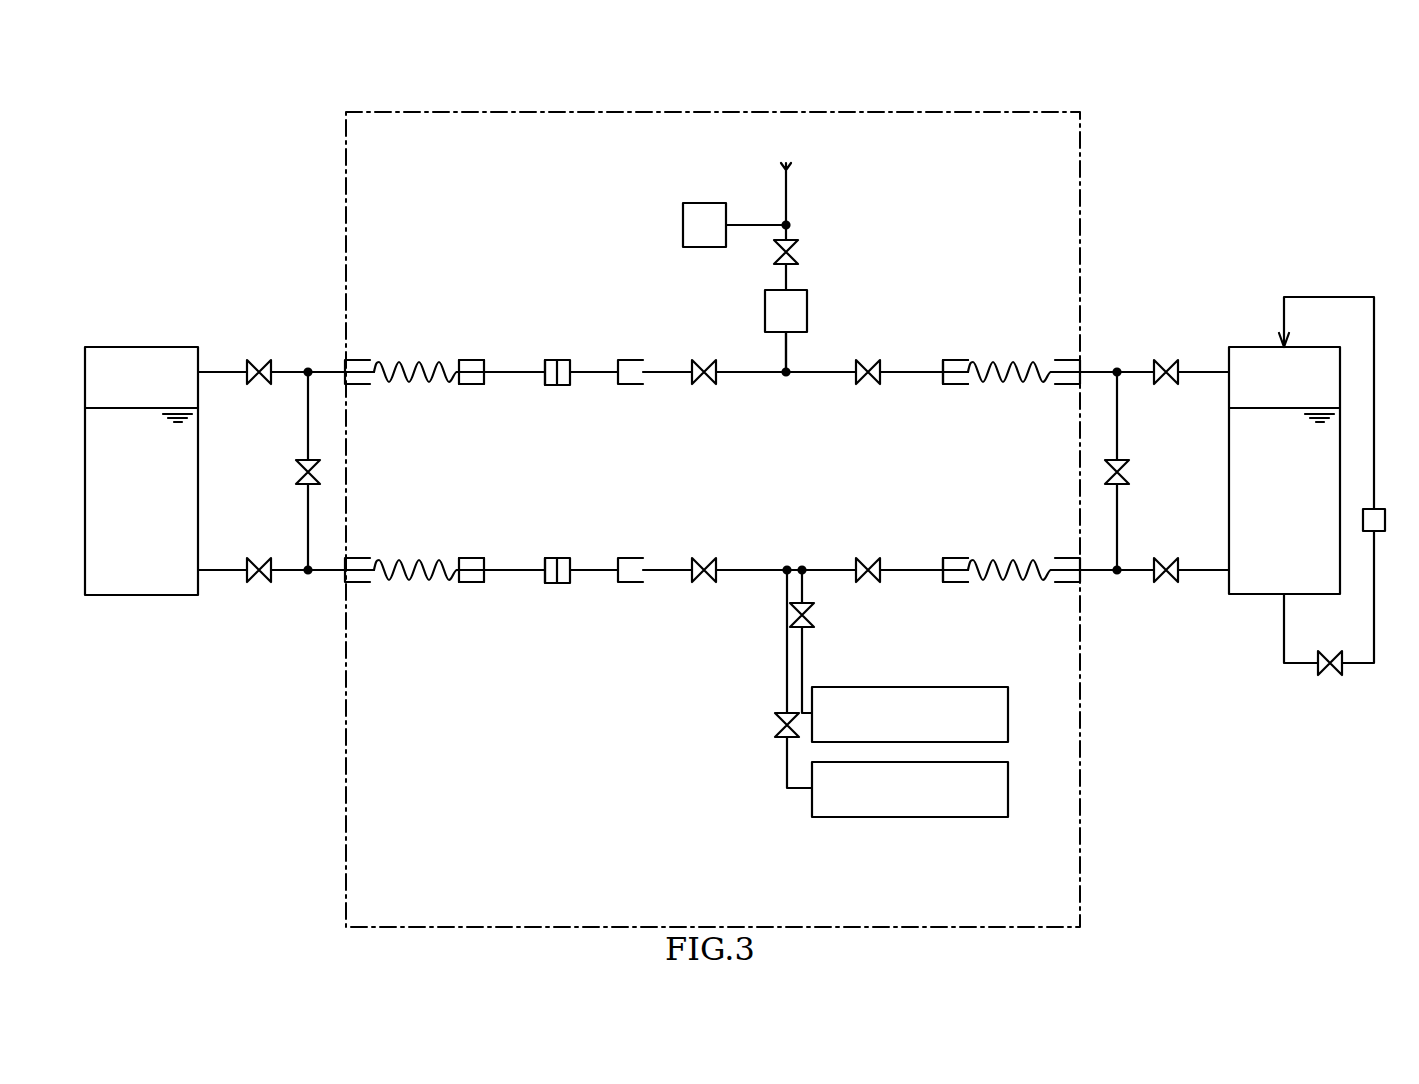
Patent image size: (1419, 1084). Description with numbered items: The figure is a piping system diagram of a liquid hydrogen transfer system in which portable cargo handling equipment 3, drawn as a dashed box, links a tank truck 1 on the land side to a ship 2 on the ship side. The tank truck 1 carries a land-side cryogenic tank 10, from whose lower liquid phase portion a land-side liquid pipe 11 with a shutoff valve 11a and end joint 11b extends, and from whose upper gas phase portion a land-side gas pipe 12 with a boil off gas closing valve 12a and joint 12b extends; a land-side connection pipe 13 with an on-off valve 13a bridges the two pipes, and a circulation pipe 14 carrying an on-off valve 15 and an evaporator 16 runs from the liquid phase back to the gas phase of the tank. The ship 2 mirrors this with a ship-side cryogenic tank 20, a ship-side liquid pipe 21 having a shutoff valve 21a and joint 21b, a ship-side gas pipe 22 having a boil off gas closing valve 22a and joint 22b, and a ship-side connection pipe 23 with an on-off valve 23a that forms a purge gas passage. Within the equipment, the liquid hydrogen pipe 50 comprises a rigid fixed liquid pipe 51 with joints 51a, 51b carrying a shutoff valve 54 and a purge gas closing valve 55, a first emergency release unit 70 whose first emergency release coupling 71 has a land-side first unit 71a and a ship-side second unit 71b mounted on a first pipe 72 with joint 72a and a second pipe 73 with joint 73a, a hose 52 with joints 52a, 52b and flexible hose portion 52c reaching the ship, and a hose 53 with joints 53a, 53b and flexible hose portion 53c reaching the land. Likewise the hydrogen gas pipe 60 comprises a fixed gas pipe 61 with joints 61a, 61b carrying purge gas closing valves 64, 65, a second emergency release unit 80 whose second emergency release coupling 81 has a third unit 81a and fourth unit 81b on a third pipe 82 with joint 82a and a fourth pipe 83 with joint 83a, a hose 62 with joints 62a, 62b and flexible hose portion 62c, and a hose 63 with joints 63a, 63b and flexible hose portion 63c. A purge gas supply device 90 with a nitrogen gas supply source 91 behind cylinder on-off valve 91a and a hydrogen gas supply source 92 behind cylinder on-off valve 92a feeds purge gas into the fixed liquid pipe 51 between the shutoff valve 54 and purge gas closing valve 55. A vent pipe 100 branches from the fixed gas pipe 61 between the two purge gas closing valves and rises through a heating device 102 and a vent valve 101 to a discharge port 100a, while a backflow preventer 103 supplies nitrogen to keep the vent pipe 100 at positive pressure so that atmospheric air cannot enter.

The tank truck 1 is at (1240, 459).
The ship 2 is at (215, 412).
The portable cargo handling equipment 3 is at (901, 108).
The land-side cryogenic tank 10 is at (1252, 347).
The land-side liquid pipe 11 is at (1207, 574).
The shutoff valve 11a is at (1168, 558).
The joint 11b is at (1062, 558).
The land-side gas pipe 12 is at (1207, 376).
The boil off gas closing valve 12a is at (1168, 360).
The joint 12b is at (1062, 386).
The land-side connection pipe 13 is at (1120, 407).
The on-off valve 13a is at (1126, 460).
The circulation pipe 14 is at (1296, 666).
The on-off valve 15 is at (1330, 651).
The evaporator 16 is at (1378, 508).
The ship-side cryogenic tank 20 is at (167, 347).
The ship-side liquid pipe 21 is at (216, 574).
The shutoff valve 21a is at (256, 558).
The joint 21b is at (364, 585).
The ship-side gas pipe 22 is at (216, 376).
The boil off gas closing valve 22a is at (256, 360).
The joint 22b is at (364, 359).
The ship-side connection pipe 23 is at (307, 408).
The on-off valve 23a is at (304, 460).
The liquid hydrogen pipe 50 is at (823, 706).
The fixed liquid pipe 51 is at (799, 534).
The joint 51a is at (640, 558).
The joint 51b is at (953, 549).
The hose 52 is at (414, 534).
The joint 52a is at (463, 549).
The joint 52b is at (366, 558).
The flexible hose portion 52c is at (418, 560).
The hose 53 is at (1011, 609).
The joint 53a is at (972, 584).
The joint 53b is at (1058, 593).
The flexible hose portion 53c is at (1014, 582).
The shutoff valve 54 is at (701, 584).
The purge gas closing valve 55 is at (865, 584).
The hydrogen gas pipe 60 is at (799, 309).
The fixed gas pipe 61 is at (799, 412).
The joint 61a is at (640, 386).
The joint 61b is at (953, 394).
The hose 62 is at (414, 412).
The joint 62a is at (463, 394).
The joint 62b is at (366, 386).
The flexible hose portion 62c is at (418, 384).
The hose 63 is at (1011, 335).
The joint 63a is at (972, 360).
The joint 63b is at (1058, 352).
The flexible hose portion 63c is at (1014, 362).
The purge gas closing valve 64 is at (701, 360).
The purge gas closing valve 65 is at (865, 360).
The first emergency release unit 70 is at (547, 580).
The first emergency release coupling 71 is at (535, 562).
The first unit 71a is at (557, 556).
The second unit 71b is at (547, 556).
The first pipe 72 is at (590, 574).
The joint 72a is at (625, 593).
The second pipe 73 is at (520, 574).
The joint 73a is at (466, 585).
The second emergency release unit 80 is at (547, 367).
The second emergency release coupling 81 is at (535, 384).
The third unit 81a is at (557, 387).
The fourth unit 81b is at (547, 388).
The third pipe 82 is at (590, 370).
The joint 82a is at (625, 352).
The fourth pipe 83 is at (520, 370).
The joint 83a is at (466, 359).
The purge gas supply device 90 is at (888, 747).
The nitrogen gas supply source 91 is at (912, 687).
The cylinder on-off valve 91a is at (808, 630).
The hydrogen gas supply source 92 is at (913, 818).
The cylinder on-off valve 92a is at (778, 740).
The vent pipe 100 is at (826, 265).
The discharge port 100a is at (789, 167).
The vent valve 101 is at (797, 256).
The heating device 102 is at (802, 288).
The backflow preventer 103 is at (708, 203).